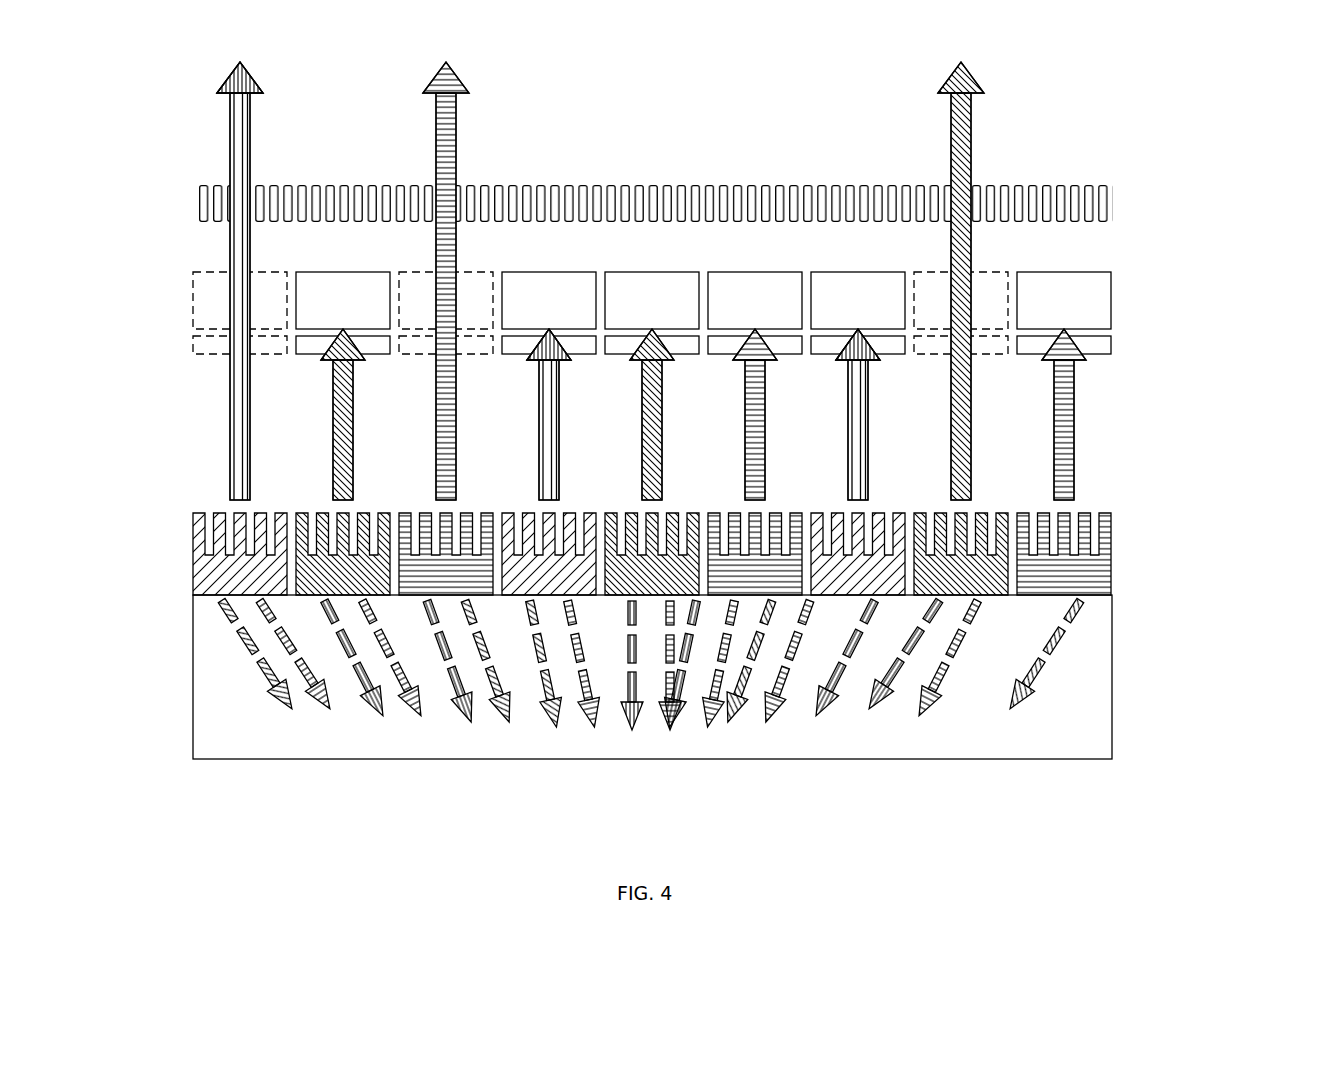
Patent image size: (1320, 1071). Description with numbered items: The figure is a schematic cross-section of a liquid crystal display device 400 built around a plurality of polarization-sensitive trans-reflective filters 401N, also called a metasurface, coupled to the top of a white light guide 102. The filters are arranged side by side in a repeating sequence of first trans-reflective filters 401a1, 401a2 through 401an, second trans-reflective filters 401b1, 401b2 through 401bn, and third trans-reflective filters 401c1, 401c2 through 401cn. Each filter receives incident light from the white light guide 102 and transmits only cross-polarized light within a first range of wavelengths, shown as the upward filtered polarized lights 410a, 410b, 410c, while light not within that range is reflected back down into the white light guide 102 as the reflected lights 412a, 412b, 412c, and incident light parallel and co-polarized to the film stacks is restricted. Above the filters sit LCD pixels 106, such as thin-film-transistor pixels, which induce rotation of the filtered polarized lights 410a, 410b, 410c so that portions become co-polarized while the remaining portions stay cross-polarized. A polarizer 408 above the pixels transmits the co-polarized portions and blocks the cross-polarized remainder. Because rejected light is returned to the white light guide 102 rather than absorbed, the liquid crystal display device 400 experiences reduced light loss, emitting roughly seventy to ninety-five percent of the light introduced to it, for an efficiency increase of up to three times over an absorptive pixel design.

The liquid crystal display device 400 is at (1186, 68).
The white light guide 102 is at (1113, 708).
The LCD pixels 106 is at (1113, 305).
The polarizer 408 is at (1115, 205).
The plurality of trans-reflective filters 401N is at (687, 527).
The first trans-reflective filter 401a1 is at (220, 512).
The second trans-reflective filter 401b1 is at (362, 511).
The third trans-reflective filter 401c1 is at (465, 511).
The first trans-reflective filter 401a2 is at (567, 511).
The second trans-reflective filter 401b2 is at (669, 511).
The third trans-reflective filter 401c2 is at (772, 511).
The first trans-reflective filter 401an is at (877, 511).
The second trans-reflective filter 401bn is at (979, 511).
The third trans-reflective filter 401cn is at (1083, 511).
The filtered polarized light 410a is at (251, 118).
The filtered polarized light 410b is at (972, 122).
The filtered polarized light 410c is at (457, 118).
The reflected light 412a is at (383, 716).
The reflected light 412b is at (292, 709).
The reflected light 412c is at (330, 709).